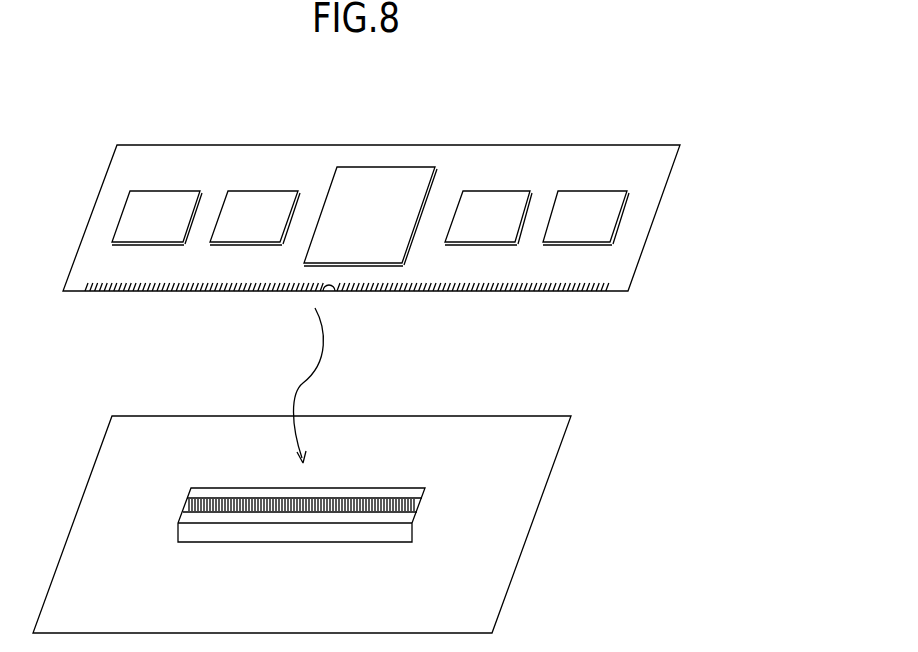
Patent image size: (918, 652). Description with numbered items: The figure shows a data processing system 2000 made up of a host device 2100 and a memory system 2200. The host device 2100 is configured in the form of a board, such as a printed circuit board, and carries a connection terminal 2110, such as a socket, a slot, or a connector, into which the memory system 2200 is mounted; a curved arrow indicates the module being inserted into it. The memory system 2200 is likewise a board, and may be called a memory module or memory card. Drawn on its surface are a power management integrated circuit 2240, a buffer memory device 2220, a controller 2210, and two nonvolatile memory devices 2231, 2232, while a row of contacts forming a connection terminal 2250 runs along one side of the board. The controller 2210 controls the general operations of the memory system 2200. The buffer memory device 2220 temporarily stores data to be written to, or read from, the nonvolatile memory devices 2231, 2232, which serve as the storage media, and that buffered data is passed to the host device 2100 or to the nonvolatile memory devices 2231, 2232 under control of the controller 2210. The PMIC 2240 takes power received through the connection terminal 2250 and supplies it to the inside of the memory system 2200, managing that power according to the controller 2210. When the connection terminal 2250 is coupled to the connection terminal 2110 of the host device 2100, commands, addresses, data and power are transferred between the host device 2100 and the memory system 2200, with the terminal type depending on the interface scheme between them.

The data processing system 2000 is at (219, 110).
The memory system 2200 is at (371, 240).
The power management integrated circuit 2240 is at (157, 218).
The buffer memory device 2220 is at (255, 218).
The controller 2210 is at (370, 216).
The nonvolatile memory device 2231 is at (488, 218).
The nonvolatile memory device 2232 is at (586, 218).
The connection terminal 2250 is at (98, 291).
The host device 2100 is at (302, 524).
The connection terminal 2110 is at (446, 482).